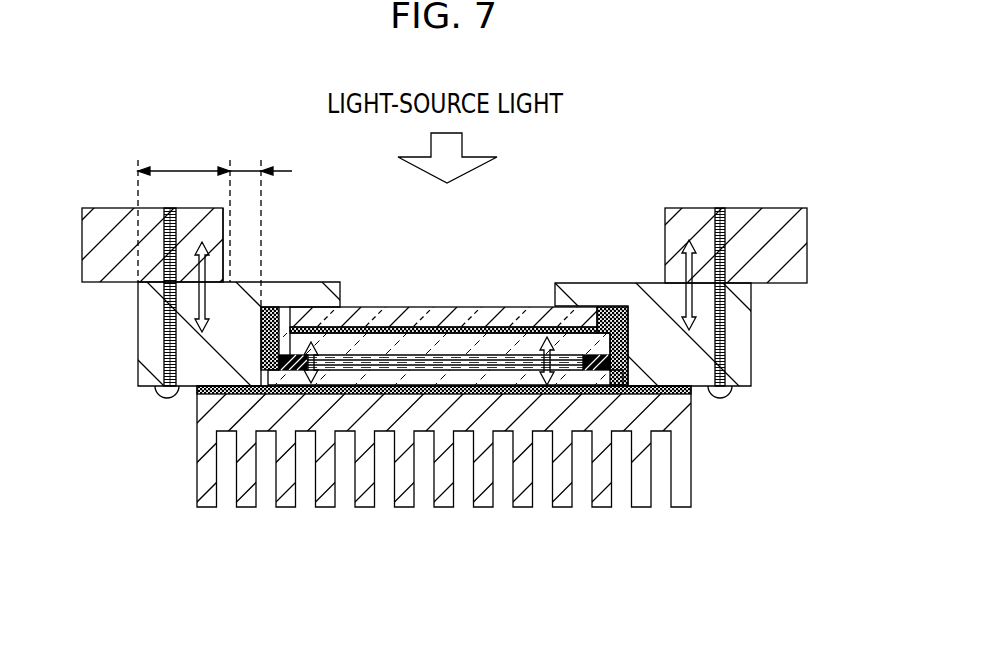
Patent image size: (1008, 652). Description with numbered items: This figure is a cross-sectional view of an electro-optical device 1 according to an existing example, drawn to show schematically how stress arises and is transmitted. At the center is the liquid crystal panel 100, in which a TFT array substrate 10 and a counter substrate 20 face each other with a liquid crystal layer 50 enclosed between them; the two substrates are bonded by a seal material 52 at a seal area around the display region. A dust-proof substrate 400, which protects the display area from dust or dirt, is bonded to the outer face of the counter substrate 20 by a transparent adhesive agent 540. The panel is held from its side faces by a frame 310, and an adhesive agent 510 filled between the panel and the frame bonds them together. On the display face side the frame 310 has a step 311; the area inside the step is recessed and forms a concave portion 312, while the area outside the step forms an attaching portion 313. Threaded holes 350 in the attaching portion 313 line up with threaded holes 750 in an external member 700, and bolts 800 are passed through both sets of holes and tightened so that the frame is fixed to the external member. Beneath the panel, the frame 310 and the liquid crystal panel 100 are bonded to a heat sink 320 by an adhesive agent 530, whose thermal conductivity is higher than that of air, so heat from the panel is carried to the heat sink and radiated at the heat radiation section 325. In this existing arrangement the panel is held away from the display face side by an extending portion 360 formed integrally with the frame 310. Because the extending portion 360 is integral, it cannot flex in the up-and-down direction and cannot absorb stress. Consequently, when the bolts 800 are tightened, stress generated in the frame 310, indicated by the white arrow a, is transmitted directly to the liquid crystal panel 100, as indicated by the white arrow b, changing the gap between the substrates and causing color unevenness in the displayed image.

The electro-optical device 1 is at (736, 128).
The TFT array substrate 10 is at (400, 377).
The counter substrate 20 is at (483, 345).
The liquid crystal layer 50 is at (443, 362).
The seal material 52 is at (283, 355).
The liquid crystal panel 100 is at (445, 479).
The frame 310 is at (504, 300).
The step 311 is at (223, 267).
The concave portion 312 is at (243, 168).
The attaching portion 313 is at (182, 168).
The heat sink 320 is at (514, 301).
The heat radiation section 325 is at (360, 538).
The threaded hole 350 is at (162, 333).
The extending portion 360 is at (325, 287).
The dust-proof substrate 400 is at (467, 308).
The adhesive agent 510 is at (612, 312).
The adhesive agent 530 is at (598, 393).
The transparent adhesive agent 540 is at (433, 330).
The external member 700 is at (504, 300).
The threaded hole 750 is at (163, 243).
The bolt 800 is at (170, 394).
The white arrow a is at (225, 217).
The white arrow b is at (312, 348).